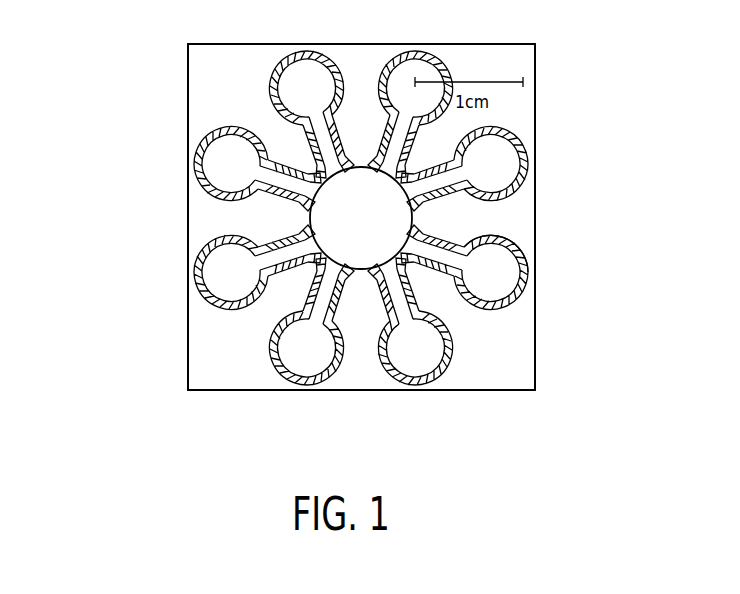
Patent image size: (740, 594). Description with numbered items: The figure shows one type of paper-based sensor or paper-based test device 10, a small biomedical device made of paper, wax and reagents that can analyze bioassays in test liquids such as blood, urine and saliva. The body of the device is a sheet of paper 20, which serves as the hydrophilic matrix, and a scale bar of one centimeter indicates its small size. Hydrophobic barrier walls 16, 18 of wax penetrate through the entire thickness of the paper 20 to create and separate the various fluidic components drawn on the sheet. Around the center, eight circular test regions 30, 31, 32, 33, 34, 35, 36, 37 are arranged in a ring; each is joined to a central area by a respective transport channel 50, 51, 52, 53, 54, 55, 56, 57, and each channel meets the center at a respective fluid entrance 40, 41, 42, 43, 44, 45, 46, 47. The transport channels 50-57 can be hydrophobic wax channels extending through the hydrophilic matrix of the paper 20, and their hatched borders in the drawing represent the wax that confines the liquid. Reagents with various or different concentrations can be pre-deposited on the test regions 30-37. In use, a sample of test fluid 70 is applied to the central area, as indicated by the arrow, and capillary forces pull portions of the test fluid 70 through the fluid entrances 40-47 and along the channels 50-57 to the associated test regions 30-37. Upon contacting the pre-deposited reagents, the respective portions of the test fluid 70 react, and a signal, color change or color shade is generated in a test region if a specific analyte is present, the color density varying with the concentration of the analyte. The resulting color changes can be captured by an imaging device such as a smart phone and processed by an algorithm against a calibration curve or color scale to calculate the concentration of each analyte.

The paper-based test device 10 is at (118, 186).
The hydrophobic barrier wall 16 is at (447, 300).
The hydrophobic barrier wall 18 is at (360, 300).
The paper 20 is at (170, 428).
The test region 30 is at (407, 78).
The test region 31 is at (503, 177).
The test region 32 is at (500, 281).
The test region 33 is at (428, 352).
The test region 34 is at (317, 362).
The test region 35 is at (228, 261).
The test region 36 is at (222, 150).
The test region 37 is at (297, 78).
The fluid entrance 40 is at (393, 158).
The fluid entrance 41 is at (380, 217).
The fluid entrance 42 is at (426, 247).
The fluid entrance 43 is at (423, 268).
The fluid entrance 44 is at (310, 276).
The fluid entrance 45 is at (300, 240).
The fluid entrance 46 is at (298, 180).
The fluid entrance 47 is at (352, 162).
The transport channel 50 is at (405, 124).
The transport channel 51 is at (445, 185).
The transport channel 52 is at (442, 249).
The transport channel 53 is at (383, 312).
The transport channel 54 is at (346, 322).
The transport channel 55 is at (282, 258).
The transport channel 56 is at (282, 168).
The transport channel 57 is at (342, 132).
The test fluid 70 is at (518, 264).